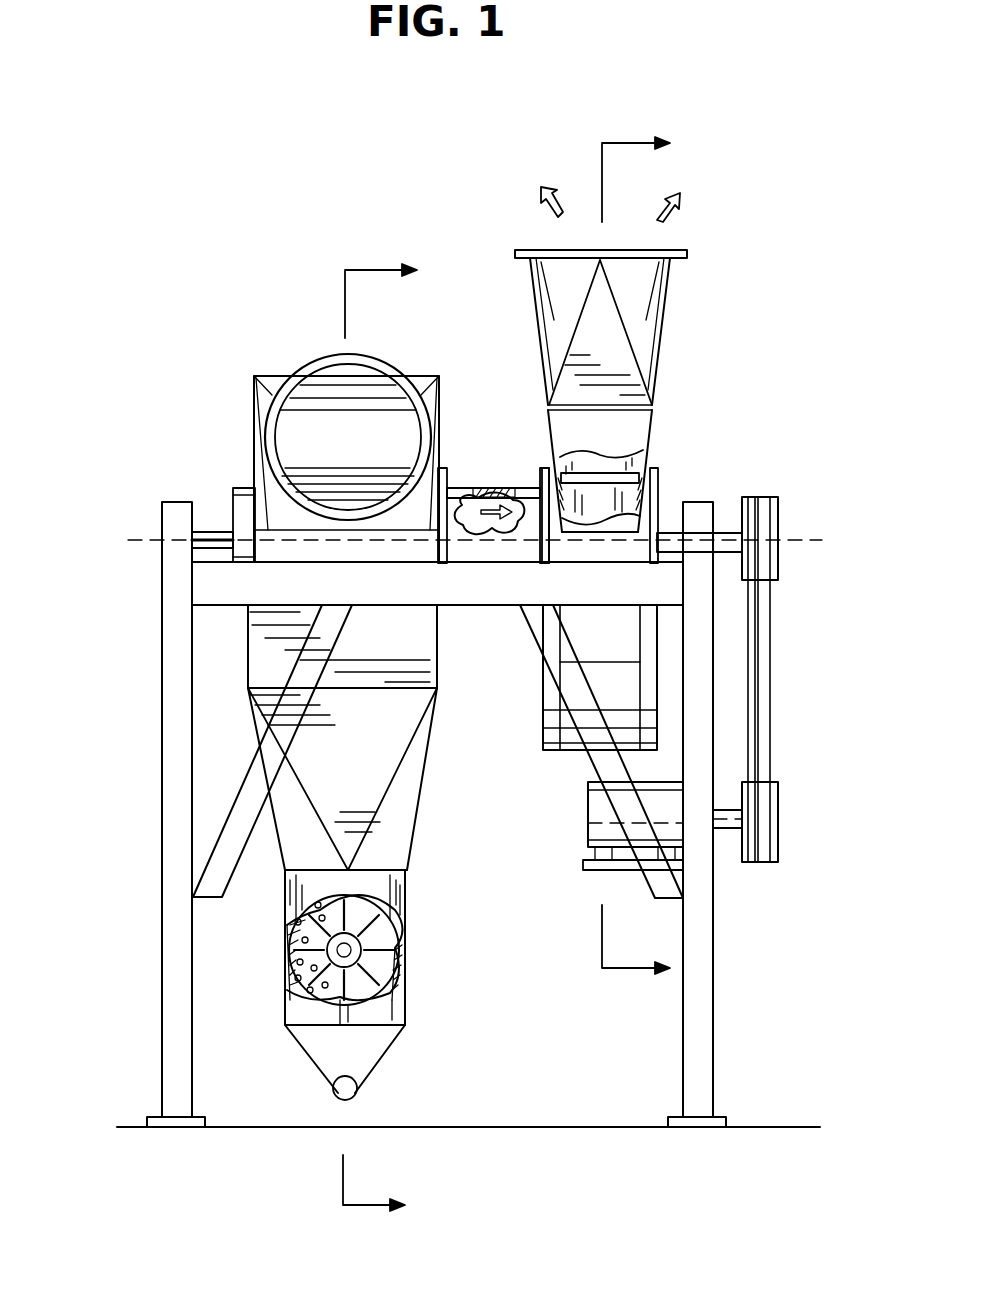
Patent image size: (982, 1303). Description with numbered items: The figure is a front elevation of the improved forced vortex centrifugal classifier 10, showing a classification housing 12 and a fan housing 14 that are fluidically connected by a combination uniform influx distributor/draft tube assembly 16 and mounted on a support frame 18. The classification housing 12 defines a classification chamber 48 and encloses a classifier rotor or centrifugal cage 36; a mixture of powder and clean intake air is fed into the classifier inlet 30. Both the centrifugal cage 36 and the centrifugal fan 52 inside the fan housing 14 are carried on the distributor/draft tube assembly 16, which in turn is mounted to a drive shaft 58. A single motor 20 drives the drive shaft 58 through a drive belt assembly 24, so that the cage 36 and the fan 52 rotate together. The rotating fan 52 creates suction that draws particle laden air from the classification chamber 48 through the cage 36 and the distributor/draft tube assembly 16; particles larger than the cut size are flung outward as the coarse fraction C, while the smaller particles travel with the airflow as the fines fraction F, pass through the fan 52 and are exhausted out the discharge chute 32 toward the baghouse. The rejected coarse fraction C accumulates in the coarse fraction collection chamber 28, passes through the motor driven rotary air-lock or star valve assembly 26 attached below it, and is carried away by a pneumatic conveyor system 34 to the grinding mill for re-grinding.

The forced vortex centrifugal classifier 10 is at (138, 272).
The classification housing 12 is at (242, 400).
The fan housing 14 is at (662, 430).
The combination uniform influx distributor/draft tube assembly 16 is at (524, 478).
The support frame 18 is at (152, 642).
The motor 20 is at (588, 820).
The drive belt assembly 24 is at (776, 636).
The rotary air-lock or star valve assembly 26 is at (417, 906).
The coarse fraction collection chamber 28 is at (430, 756).
The classifier inlet 30 is at (330, 360).
The discharge chute 32 is at (668, 325).
The pneumatic conveyor system 34 is at (358, 1092).
The classifier rotor or centrifugal cage 36 is at (295, 462).
The classification chamber 48 is at (365, 432).
The centrifugal fan 52 is at (612, 478).
The drive shaft 58 is at (215, 530).
The fines fraction F is at (492, 502).
The coarse fraction C is at (290, 970).